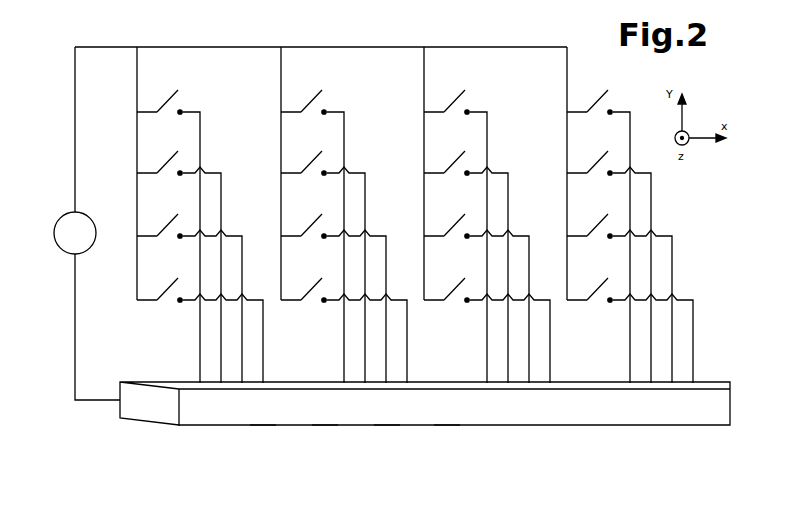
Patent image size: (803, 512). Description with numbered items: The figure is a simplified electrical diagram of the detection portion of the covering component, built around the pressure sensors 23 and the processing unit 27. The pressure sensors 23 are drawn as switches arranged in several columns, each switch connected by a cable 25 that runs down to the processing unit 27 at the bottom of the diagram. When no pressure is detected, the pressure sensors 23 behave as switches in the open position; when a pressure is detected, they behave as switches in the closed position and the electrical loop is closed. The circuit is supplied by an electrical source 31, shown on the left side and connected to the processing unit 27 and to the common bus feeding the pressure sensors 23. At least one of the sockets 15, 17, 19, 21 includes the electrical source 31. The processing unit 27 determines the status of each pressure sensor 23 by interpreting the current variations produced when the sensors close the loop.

The socket 15 is at (263, 425).
The socket 17 is at (325, 425).
The socket 19 is at (387, 425).
The socket 21 is at (447, 425).
The pressure sensor 23 is at (200, 104).
The cable 25 is at (221, 340).
The processing unit 27 is at (496, 416).
The electrical source 31 is at (84, 242).